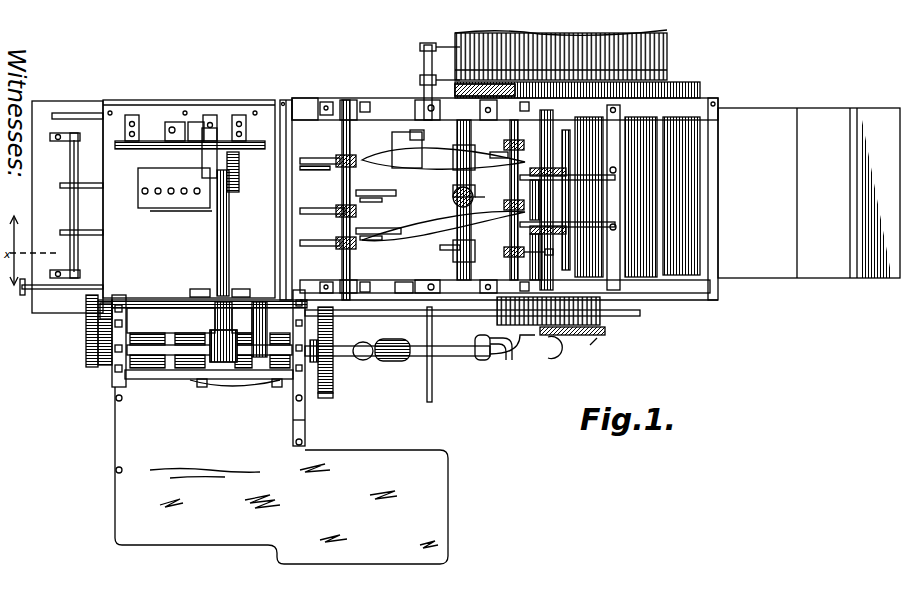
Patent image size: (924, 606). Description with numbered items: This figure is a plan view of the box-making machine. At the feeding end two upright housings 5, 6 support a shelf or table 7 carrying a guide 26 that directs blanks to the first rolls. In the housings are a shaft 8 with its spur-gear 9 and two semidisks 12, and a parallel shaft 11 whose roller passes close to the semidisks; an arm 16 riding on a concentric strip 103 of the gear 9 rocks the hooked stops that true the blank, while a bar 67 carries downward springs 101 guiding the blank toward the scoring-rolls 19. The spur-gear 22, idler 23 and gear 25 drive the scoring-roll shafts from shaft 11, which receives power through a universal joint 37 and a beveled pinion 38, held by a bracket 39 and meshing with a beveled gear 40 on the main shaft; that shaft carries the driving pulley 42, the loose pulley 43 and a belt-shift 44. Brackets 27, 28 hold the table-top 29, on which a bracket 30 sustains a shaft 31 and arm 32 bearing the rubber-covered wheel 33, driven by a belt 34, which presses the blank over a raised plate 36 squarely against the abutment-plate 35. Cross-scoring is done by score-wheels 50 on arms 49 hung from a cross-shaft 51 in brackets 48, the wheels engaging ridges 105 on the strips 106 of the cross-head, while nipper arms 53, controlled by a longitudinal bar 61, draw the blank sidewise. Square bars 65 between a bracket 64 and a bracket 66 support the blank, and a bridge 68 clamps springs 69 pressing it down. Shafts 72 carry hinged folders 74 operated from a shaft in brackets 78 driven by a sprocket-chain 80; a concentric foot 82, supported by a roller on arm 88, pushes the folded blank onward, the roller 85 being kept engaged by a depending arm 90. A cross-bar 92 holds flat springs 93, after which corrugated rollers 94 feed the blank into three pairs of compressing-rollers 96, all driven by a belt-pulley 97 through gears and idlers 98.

The upright housing 5 is at (112, 385).
The upright housing 6 is at (299, 368).
The shelf or table 7 is at (281, 475).
The shaft 8 is at (163, 368).
The spur-gear 9 is at (328, 393).
The shaft 11 is at (360, 360).
The semidisks 12 is at (229, 332).
The arm 16 is at (320, 393).
The scoring-rolls 19 is at (220, 285).
The spur-gear 22 is at (86, 362).
The idler 23 is at (98, 332).
The gear 25 is at (86, 308).
The guide 26 is at (293, 428).
The upright bracket 27 is at (58, 119).
The upright bracket 28 is at (61, 291).
The table-top 29 is at (189, 199).
The bracket 30 is at (206, 120).
The horizontal shaft 31 is at (128, 149).
The arm 32 is at (200, 160).
The wheel 33 is at (240, 186).
The belt 34 is at (230, 245).
The abutment-plate 35 is at (246, 149).
The raised plate 36 is at (138, 193).
The universal joint 37 is at (378, 361).
The beveled pinion 38 is at (562, 349).
The bracket 39 is at (515, 360).
The beveled gear 40 is at (605, 334).
The pulley 42 is at (668, 60).
The loose pulley 43 is at (668, 36).
The belt-shift 44 is at (424, 64).
The upright brackets 48 is at (505, 199).
The arms 49 is at (358, 227).
The score-wheels 50 is at (323, 248).
The cross-shaft 51 is at (328, 200).
The arms 53 is at (427, 253).
The longitudinal bar 61 is at (393, 147).
The bracket 64 is at (70, 173).
The square bars 65 is at (62, 231).
The bracket 66 is at (593, 348).
The bar 67 is at (150, 300).
The bridge 68 is at (286, 100).
The springs 69 is at (328, 202).
The shafts 72 is at (404, 281).
The folders 74 is at (443, 200).
The brackets 78 is at (599, 199).
The sprocket-chain 80 is at (420, 82).
The concentric foot 82 is at (439, 202).
The frictional roller 85 is at (492, 150).
The arm 88 is at (520, 201).
The depending arm 90 is at (504, 252).
The cross-bar 92 is at (618, 278).
The flat springs 93 is at (530, 170).
The corrugated rollers 94 is at (567, 230).
The compressing-rollers 96 is at (700, 210).
The belt-pulley 97 is at (601, 317).
The idlers 98 is at (668, 82).
The springs 101 is at (212, 329).
The concentric strip 103 is at (334, 409).
The raised ridges 105 is at (375, 203).
The strips 106 is at (371, 250).